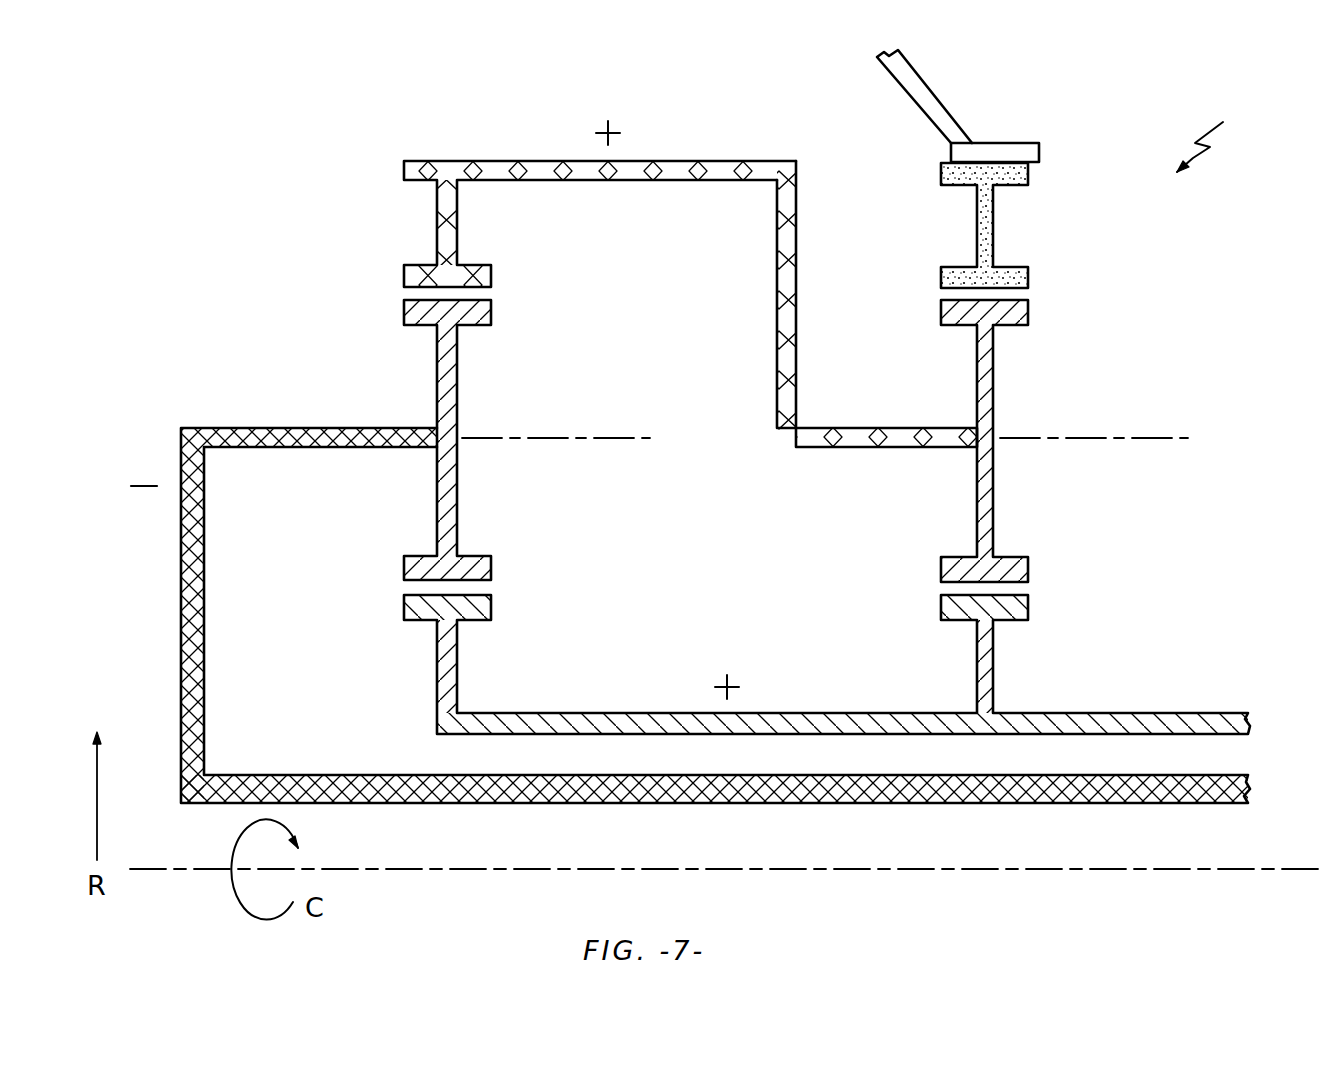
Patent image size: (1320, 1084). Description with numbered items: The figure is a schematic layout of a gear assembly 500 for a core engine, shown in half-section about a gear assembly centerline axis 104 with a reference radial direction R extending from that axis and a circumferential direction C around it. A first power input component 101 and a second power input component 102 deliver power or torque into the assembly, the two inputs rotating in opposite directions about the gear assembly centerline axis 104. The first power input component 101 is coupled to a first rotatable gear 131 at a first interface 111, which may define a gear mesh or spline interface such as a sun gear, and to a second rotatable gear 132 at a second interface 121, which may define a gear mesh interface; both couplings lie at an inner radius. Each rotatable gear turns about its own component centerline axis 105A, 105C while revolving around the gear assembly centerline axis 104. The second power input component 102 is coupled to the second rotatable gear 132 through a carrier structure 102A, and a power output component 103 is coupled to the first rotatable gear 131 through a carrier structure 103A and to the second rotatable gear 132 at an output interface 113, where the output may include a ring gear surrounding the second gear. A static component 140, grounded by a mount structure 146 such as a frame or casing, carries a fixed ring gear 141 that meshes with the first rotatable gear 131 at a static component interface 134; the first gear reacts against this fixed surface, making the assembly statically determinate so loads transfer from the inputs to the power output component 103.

The gear assembly 500 is at (1230, 132).
The first power input component 101 is at (663, 713).
The second power input component 102 is at (181, 612).
The carrier structure 102A is at (257, 428).
The power output component 103 is at (453, 161).
The carrier structure 103A is at (730, 161).
The gear assembly centerline axis 104 is at (530, 869).
The component centerline axis 105A is at (1097, 437).
The component centerline axis 105C is at (555, 437).
The first interface 111 is at (1033, 588).
The output interface 113 is at (493, 293).
The second interface 121 is at (493, 587).
The first rotatable gear 131 is at (993, 498).
The second rotatable gear 132 is at (457, 495).
The static component interface 134 is at (940, 292).
The static component 140 is at (1007, 230).
The ring gear 141 is at (1028, 275).
The mount structure 146 is at (940, 100).